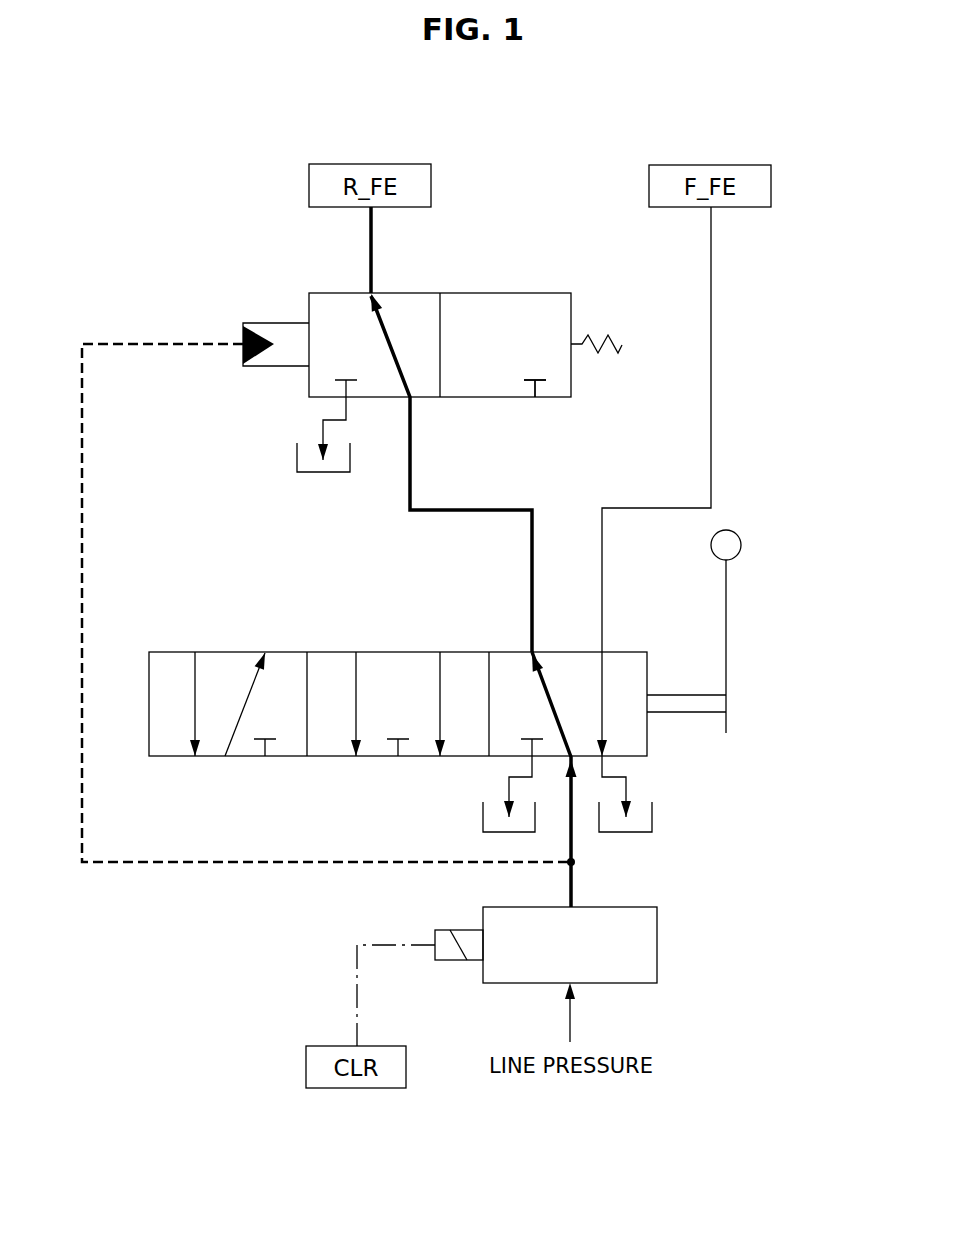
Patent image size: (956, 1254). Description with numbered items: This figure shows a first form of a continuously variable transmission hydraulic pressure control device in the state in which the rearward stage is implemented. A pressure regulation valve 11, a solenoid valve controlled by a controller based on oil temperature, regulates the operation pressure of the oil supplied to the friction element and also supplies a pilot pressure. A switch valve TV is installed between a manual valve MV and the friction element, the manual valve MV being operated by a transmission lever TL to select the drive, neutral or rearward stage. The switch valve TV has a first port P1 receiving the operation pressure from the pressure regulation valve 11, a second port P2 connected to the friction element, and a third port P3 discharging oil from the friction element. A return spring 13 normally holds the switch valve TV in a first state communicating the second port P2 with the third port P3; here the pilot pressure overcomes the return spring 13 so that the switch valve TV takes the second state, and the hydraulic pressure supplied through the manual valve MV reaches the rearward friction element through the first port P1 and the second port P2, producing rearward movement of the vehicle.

The pressure regulation valve 11 is at (657, 948).
The return spring 13 is at (609, 343).
The switch valve TV is at (286, 294).
The manual valve MV is at (193, 632).
The transmission lever TL is at (738, 536).
The first port P1 is at (535, 397).
The second port P2 is at (474, 393).
The third port P3 is at (473, 397).